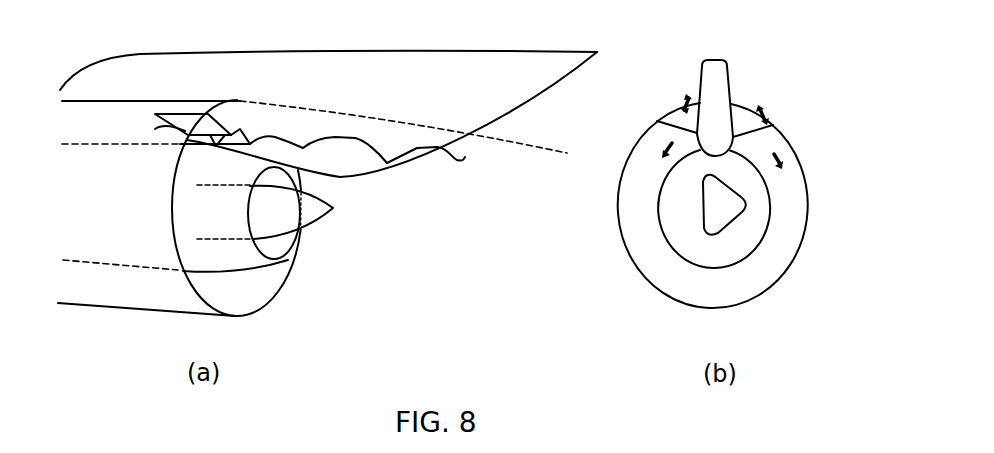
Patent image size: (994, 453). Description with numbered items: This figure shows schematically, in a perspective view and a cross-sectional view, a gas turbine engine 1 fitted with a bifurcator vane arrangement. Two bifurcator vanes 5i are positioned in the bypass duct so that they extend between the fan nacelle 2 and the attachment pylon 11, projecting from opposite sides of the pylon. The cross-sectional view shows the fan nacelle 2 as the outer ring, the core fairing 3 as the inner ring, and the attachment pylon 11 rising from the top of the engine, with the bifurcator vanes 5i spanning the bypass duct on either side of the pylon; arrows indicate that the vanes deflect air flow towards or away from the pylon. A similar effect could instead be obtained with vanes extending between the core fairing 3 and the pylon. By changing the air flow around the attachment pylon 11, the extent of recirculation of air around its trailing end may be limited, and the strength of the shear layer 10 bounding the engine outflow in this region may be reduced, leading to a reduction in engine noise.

The engine 1 is at (159, 321).
The fan nacelle 2 is at (617, 201).
The core fairing 3 is at (768, 189).
The bifurcator vanes 5i is at (195, 113).
The shear layer 10 is at (343, 140).
The attachment pylon 11 is at (478, 107).